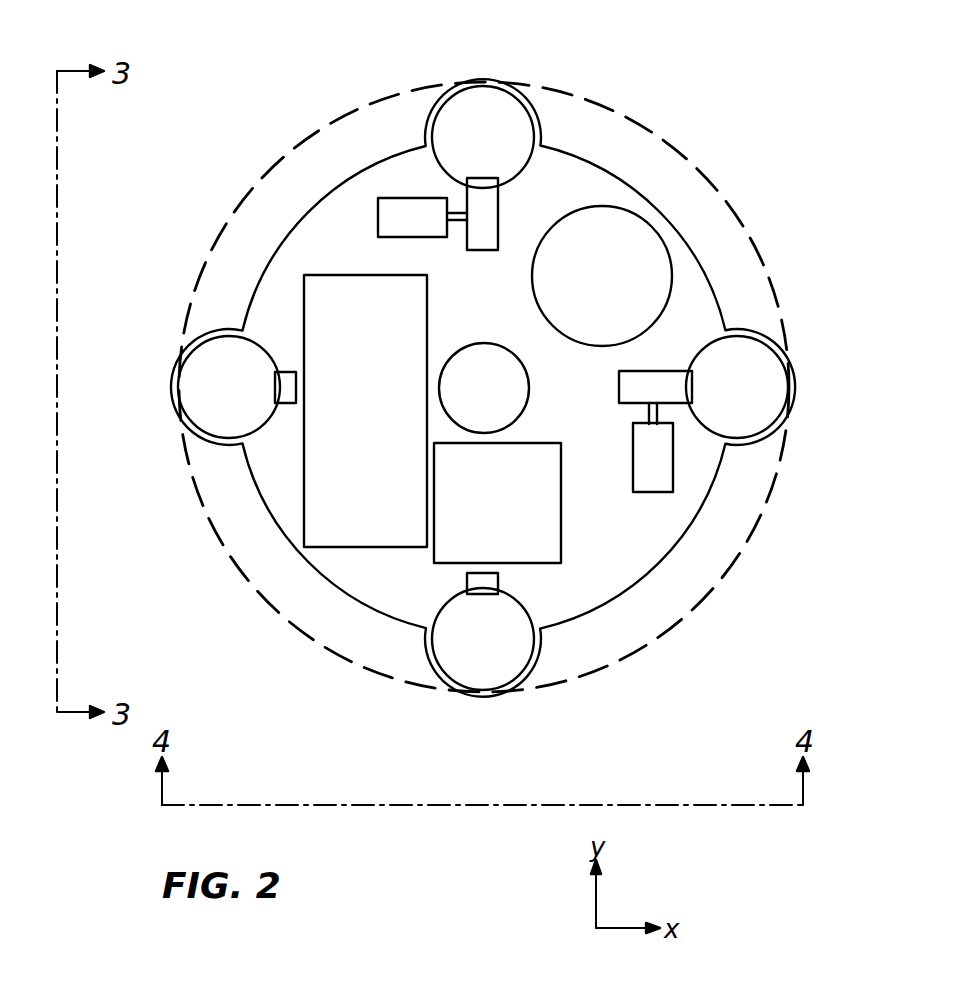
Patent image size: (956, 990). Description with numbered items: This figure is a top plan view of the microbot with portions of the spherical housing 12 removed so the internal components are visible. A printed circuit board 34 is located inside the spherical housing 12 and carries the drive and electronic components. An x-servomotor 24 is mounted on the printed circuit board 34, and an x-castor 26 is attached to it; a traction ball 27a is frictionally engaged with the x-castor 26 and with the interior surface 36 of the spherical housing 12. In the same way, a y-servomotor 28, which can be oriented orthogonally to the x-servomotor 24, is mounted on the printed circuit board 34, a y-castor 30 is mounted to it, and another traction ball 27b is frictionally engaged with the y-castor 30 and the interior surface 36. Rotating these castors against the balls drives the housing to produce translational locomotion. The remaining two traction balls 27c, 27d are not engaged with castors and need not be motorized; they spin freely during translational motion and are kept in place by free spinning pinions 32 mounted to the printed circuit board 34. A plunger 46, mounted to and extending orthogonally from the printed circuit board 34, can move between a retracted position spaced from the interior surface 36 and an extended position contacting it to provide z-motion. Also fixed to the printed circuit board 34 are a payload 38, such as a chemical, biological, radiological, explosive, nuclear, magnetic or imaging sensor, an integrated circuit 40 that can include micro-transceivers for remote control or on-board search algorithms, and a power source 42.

The spherical housing 12 is at (250, 173).
The x-servomotor 24 is at (652, 476).
The x-castor 26 is at (672, 383).
The traction ball 27a is at (762, 370).
The traction ball 27b is at (507, 112).
The traction ball 27c is at (215, 415).
The traction ball 27d is at (463, 650).
The y-servomotor 28 is at (403, 216).
The y-castor 30 is at (485, 201).
The free spinning pinion 32 is at (288, 388).
The printed circuit board 34 is at (588, 413).
The interior surface 36 is at (738, 229).
The payload 38 is at (384, 445).
The integrated circuit 40 is at (514, 517).
The power source 42 is at (618, 293).
The plunger 46 is at (500, 403).